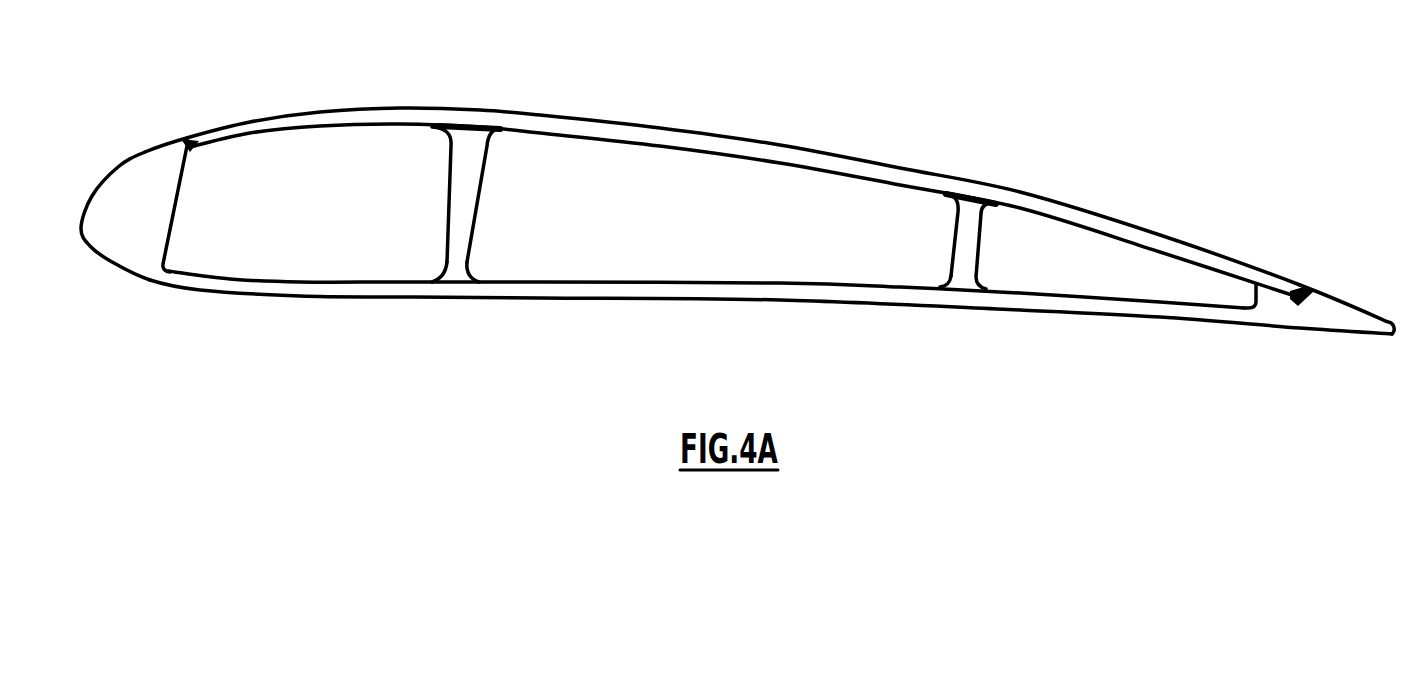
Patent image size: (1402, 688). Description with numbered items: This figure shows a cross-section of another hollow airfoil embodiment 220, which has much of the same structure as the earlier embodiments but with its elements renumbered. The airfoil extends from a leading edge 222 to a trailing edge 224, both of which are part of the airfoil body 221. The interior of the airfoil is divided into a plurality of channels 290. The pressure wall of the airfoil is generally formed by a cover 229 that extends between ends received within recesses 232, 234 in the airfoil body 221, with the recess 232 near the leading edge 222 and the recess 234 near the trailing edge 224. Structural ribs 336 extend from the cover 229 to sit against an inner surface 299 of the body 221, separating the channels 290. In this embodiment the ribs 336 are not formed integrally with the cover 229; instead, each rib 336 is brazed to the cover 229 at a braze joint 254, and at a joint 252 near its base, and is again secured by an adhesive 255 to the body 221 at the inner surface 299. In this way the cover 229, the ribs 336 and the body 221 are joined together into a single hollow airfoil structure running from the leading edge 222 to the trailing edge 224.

The airfoil embodiment 220 is at (730, 246).
The airfoil body 221 is at (682, 300).
The leading edge 222 is at (81, 228).
The trailing edge 224 is at (1400, 384).
The cover 229 is at (600, 130).
The recess 232 is at (184, 152).
The recess 234 is at (1250, 284).
The braze joint 252 is at (444, 273).
The braze joint 254 is at (455, 126).
The adhesive 255 is at (480, 281).
The channel 290 is at (342, 225).
The inner surface 299 is at (637, 280).
The structural rib 336 is at (458, 210).